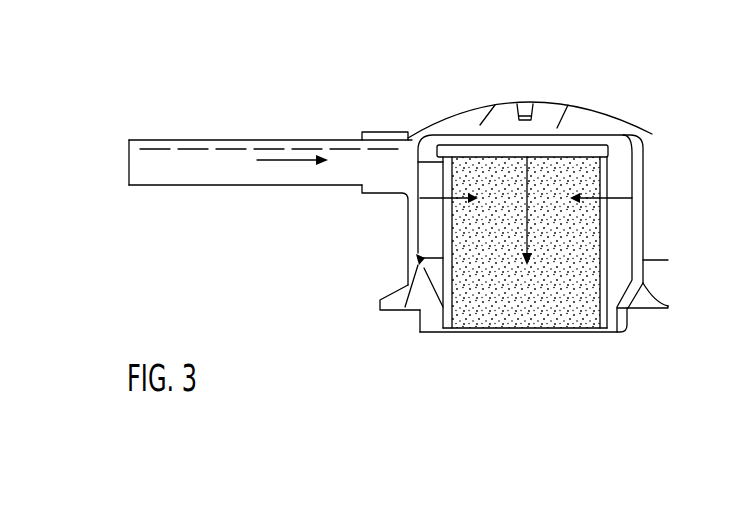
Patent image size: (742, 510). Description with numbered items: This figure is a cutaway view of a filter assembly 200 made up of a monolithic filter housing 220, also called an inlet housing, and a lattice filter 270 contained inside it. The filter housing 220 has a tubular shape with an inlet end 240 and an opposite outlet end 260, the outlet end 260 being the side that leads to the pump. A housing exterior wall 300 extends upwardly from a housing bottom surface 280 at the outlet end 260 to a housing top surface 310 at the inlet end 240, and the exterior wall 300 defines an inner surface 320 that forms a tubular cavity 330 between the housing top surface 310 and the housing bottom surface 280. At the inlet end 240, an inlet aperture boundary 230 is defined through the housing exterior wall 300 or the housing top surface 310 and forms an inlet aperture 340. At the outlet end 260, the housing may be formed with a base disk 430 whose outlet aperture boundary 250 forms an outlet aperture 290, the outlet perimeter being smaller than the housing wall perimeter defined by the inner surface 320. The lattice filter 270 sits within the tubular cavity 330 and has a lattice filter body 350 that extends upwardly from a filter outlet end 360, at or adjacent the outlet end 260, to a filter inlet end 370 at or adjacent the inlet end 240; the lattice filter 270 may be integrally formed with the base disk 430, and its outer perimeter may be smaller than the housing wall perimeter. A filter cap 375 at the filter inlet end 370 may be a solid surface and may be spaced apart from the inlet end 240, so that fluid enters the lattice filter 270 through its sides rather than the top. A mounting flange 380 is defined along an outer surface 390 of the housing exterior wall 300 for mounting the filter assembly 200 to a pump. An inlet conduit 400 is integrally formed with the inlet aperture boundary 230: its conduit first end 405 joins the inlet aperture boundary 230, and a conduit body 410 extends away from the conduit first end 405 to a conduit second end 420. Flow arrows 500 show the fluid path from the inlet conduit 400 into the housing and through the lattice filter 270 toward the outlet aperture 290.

The filter assembly 200 is at (655, 85).
The filter housing 220 is at (643, 160).
The inlet aperture boundary 230 is at (393, 132).
The inlet end 240 is at (480, 123).
The outlet aperture boundary 250 is at (557, 330).
The outlet end 260 is at (428, 322).
The lattice filter 270 is at (482, 287).
The housing bottom surface 280 is at (442, 333).
The outlet aperture 290 is at (510, 333).
The housing exterior wall 300 is at (643, 233).
The housing top surface 310 is at (595, 105).
The inner surface 320 is at (410, 226).
The tubular cavity 330 is at (418, 262).
The inlet aperture 340 is at (395, 162).
The lattice filter body 350 is at (615, 222).
The filter outlet end 360 is at (557, 318).
The filter inlet end 370 is at (612, 150).
The filter cap 375 is at (544, 148).
The mounting flange 380 is at (668, 306).
The outer surface 390 is at (643, 262).
The inlet conduit 400 is at (178, 142).
The conduit first end 405 is at (358, 186).
The conduit body 410 is at (190, 187).
The conduit second end 420 is at (130, 184).
The base disk 430 is at (580, 332).
The flow arrows 500 is at (280, 158).